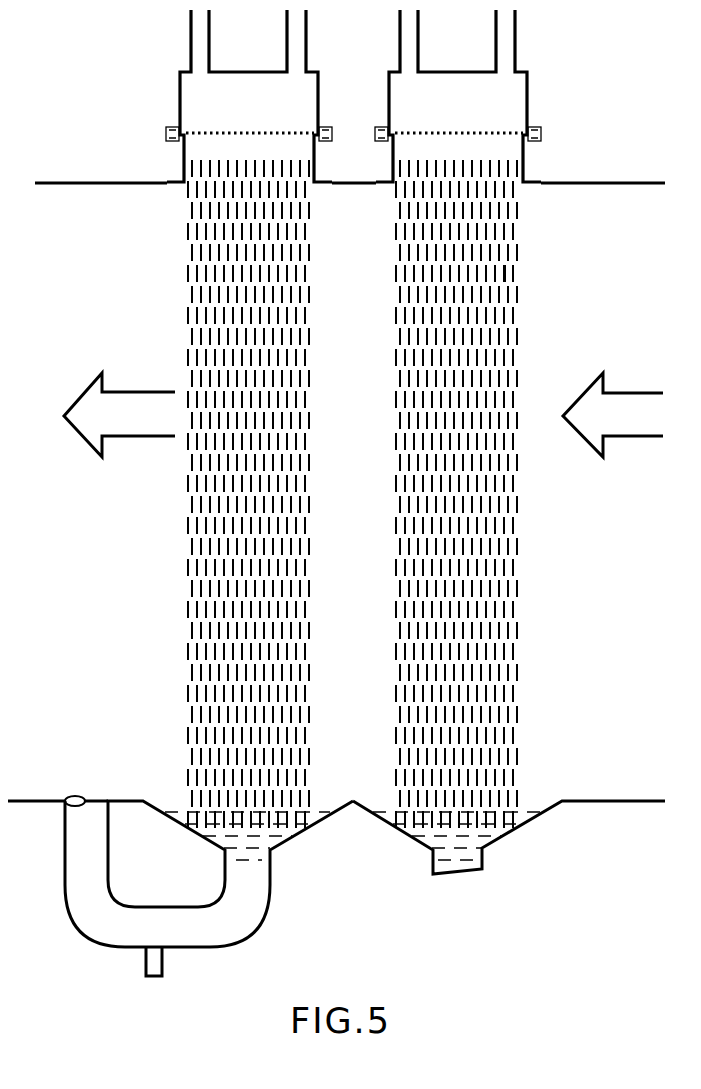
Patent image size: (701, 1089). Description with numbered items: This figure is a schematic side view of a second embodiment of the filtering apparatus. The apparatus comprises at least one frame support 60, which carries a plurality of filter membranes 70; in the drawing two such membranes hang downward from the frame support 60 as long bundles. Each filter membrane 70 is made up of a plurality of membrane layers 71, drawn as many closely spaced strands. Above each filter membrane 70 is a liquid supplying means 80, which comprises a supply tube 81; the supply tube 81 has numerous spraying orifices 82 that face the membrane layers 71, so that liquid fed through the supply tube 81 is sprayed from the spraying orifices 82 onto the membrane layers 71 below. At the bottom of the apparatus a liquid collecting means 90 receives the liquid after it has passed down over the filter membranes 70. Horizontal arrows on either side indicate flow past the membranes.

The frame support 60 is at (350, 162).
The filter membrane 70 is at (522, 240).
The membrane layer 71 is at (505, 278).
The liquid supplying means 80 is at (456, 96).
The supply tube 81 is at (530, 78).
The spraying orifices 82 is at (492, 131).
The liquid collecting means 90 is at (508, 838).